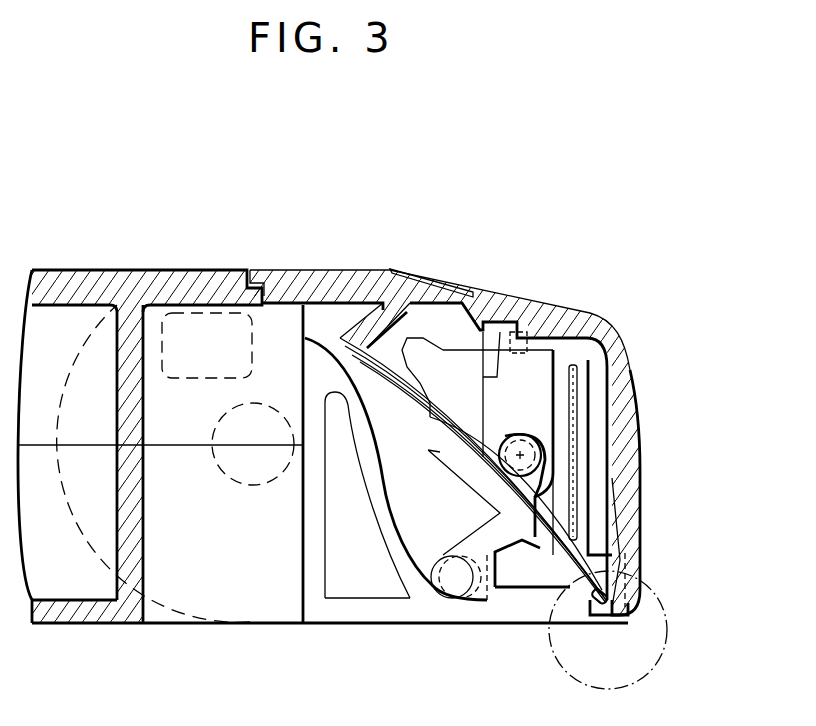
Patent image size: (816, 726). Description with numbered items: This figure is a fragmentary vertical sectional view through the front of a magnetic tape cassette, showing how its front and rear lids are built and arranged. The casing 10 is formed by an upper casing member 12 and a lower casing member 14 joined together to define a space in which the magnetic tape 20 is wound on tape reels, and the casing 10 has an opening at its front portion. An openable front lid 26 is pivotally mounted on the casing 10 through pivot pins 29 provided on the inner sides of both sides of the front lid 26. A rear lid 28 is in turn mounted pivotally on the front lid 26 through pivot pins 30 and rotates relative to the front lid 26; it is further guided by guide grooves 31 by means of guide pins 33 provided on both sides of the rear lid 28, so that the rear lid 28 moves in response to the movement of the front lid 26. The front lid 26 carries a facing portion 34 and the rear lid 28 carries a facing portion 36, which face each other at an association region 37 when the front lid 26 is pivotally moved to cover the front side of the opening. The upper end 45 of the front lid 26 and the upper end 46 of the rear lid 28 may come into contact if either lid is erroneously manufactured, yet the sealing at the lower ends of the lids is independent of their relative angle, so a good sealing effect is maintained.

The casing 10 is at (157, 270).
The upper casing member 12 is at (73, 270).
The lower casing member 14 is at (473, 610).
The magnetic tape 20 is at (578, 382).
The front lid 26 is at (643, 438).
The rear lid 28 is at (540, 550).
The pivot pins 29 is at (250, 463).
The pivot pins 30 is at (518, 434).
The guide grooves 31 is at (402, 497).
The guide pins 33 is at (447, 556).
The facing portion 34 is at (592, 608).
The facing portion 36 is at (603, 613).
The association region 37 is at (668, 634).
The upper end 45 is at (492, 305).
The upper end 46 is at (470, 290).